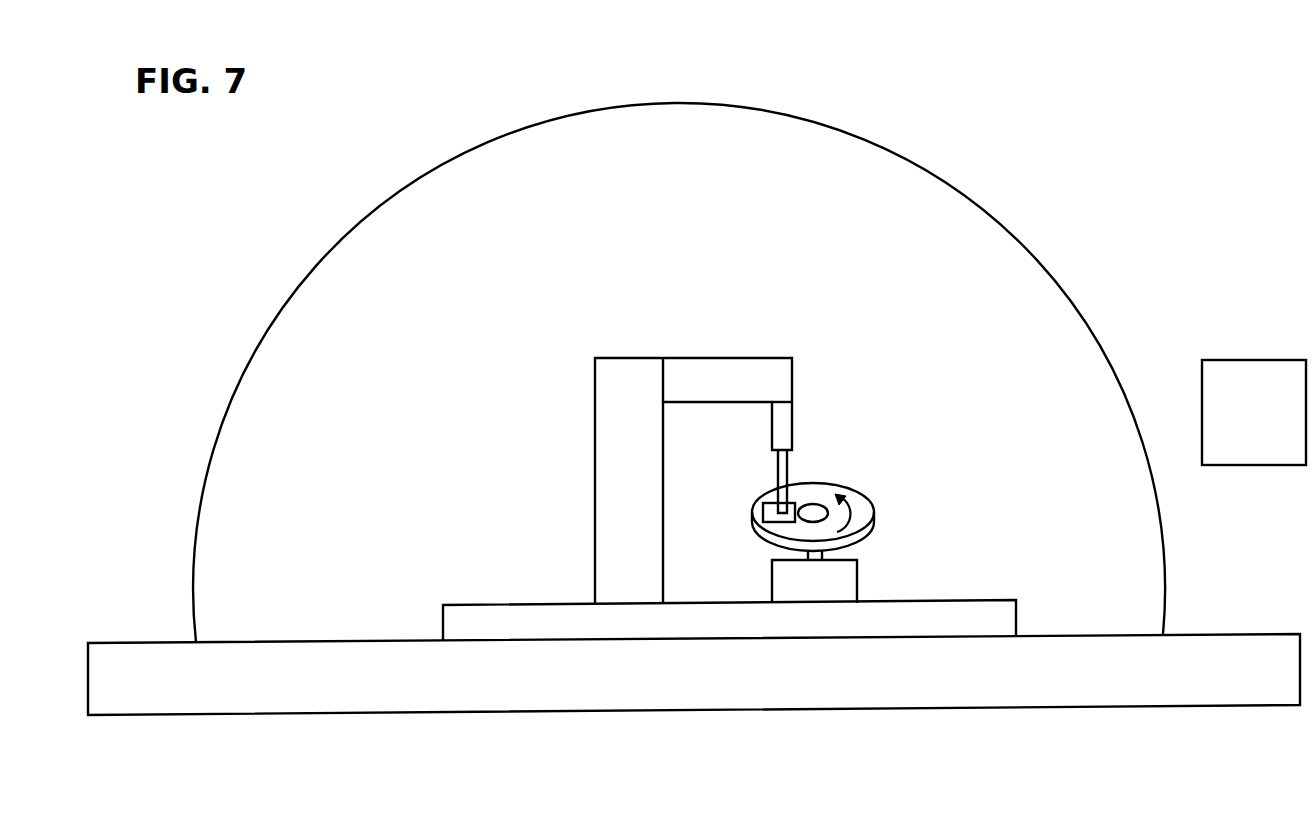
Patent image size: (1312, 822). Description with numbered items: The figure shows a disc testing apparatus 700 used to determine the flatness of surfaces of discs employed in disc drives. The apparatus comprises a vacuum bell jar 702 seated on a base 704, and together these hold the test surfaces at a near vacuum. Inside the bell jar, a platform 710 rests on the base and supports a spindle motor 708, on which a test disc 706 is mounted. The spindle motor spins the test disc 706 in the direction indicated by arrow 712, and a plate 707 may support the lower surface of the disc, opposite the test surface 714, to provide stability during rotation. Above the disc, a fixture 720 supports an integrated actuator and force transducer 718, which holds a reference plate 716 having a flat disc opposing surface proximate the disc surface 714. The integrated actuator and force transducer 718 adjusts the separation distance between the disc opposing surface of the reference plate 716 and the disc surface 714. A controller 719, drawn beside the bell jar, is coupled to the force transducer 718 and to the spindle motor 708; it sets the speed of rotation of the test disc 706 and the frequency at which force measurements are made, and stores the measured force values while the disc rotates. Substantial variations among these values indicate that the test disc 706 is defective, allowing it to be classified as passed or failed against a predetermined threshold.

The disc testing apparatus 700 is at (972, 105).
The vacuum bell jar 702 is at (1010, 235).
The base 704 is at (1103, 692).
The test disc 706 is at (875, 503).
The plate 707 is at (870, 537).
The spindle motor 708 is at (857, 578).
The platform 710 is at (993, 620).
The arrow 712 is at (857, 507).
The test surface 714 is at (812, 495).
The reference plate 716 is at (770, 512).
The integrated actuator and force transducer 718 is at (777, 465).
The controller 719 is at (1278, 438).
The fixture 720 is at (777, 383).